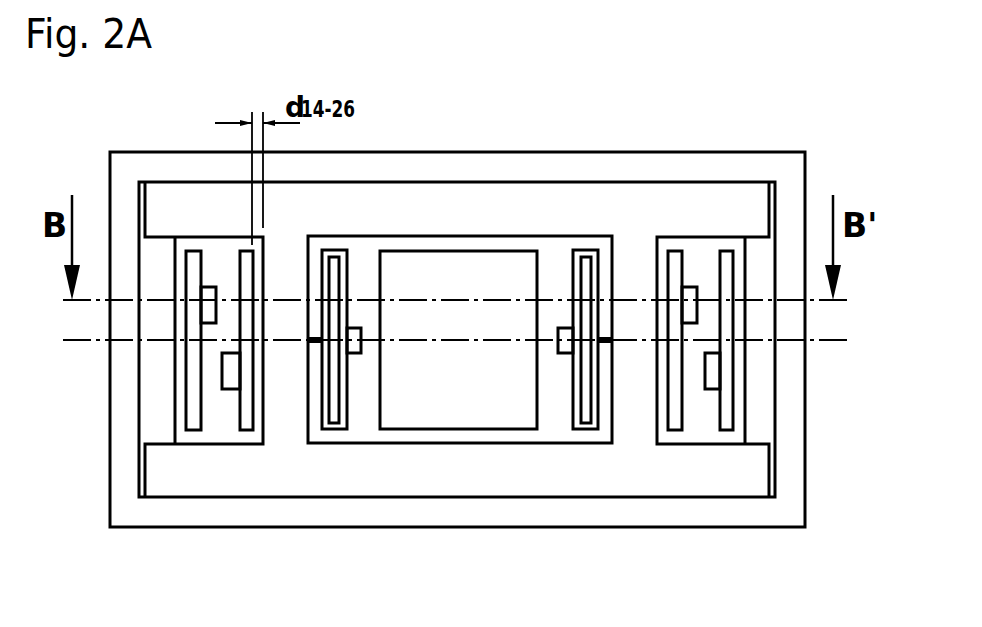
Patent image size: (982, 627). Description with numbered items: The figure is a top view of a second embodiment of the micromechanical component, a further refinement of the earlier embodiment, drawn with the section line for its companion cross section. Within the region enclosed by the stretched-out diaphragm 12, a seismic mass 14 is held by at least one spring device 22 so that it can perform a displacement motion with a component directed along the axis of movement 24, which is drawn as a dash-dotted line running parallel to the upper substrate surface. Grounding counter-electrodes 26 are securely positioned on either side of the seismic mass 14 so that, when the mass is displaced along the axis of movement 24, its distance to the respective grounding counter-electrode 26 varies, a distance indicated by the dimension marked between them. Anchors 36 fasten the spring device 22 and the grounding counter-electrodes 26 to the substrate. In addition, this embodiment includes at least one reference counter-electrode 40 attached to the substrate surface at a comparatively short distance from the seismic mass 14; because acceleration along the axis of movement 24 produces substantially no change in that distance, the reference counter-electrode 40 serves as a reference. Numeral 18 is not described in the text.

The diaphragm 12 is at (127, 462).
The seismic mass 14 is at (759, 253).
The seismic mass 18 is at (478, 413).
The spring device 22 is at (325, 413).
The axis of movement 24 is at (843, 340).
The grounding counter-electrode 26 is at (190, 423).
The anchor 36 is at (352, 353).
The reference counter-electrode 40 is at (284, 393).